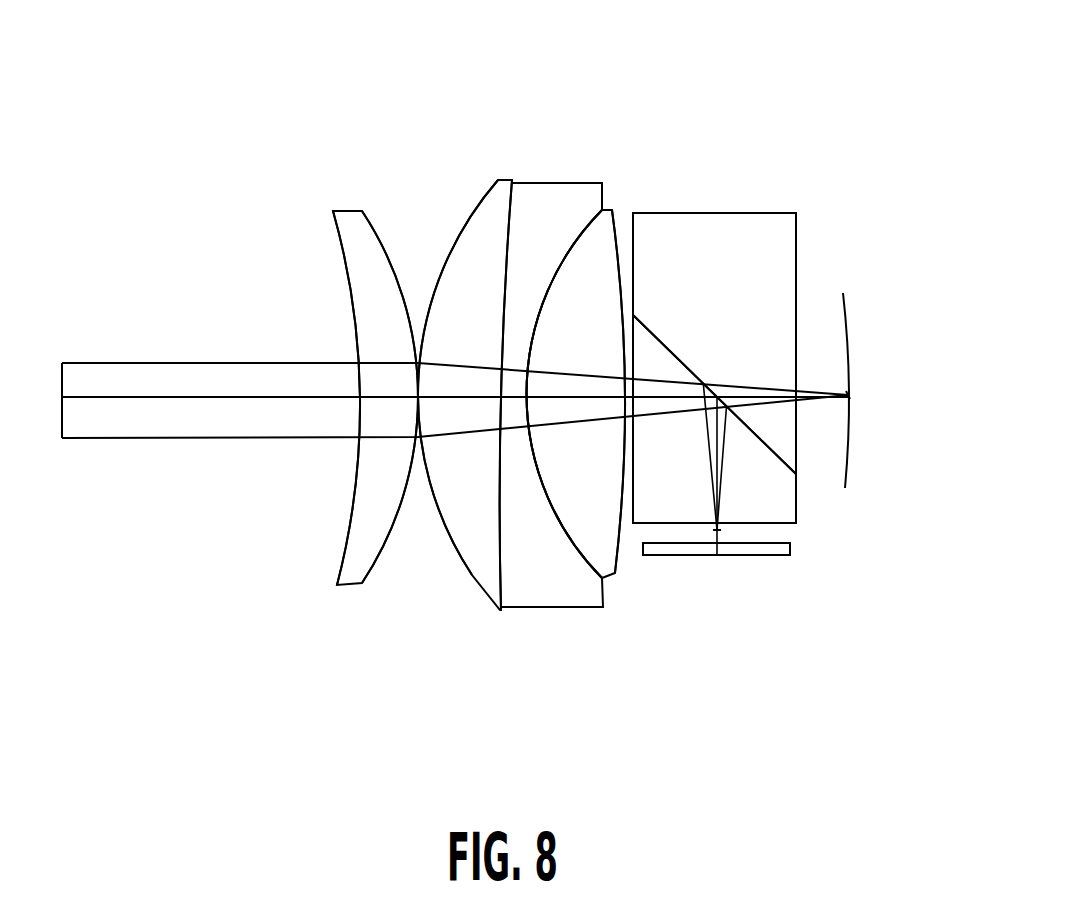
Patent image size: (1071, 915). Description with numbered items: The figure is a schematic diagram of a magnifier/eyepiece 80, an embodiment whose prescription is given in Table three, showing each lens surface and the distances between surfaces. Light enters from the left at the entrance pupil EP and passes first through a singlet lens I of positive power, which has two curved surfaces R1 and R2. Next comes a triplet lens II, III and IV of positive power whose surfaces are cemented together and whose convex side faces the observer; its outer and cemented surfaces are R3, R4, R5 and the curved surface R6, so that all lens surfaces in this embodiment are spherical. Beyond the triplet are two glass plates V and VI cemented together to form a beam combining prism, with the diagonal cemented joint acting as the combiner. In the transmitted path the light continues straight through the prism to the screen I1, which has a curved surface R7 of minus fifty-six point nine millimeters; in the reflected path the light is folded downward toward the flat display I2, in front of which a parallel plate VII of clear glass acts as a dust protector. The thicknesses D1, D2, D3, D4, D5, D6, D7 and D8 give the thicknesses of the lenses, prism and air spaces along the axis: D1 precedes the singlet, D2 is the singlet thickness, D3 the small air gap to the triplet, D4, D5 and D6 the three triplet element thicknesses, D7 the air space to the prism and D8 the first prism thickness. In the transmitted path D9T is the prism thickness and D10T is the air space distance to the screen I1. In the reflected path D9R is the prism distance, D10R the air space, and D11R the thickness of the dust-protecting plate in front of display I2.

The magnifier/eyepiece 80 is at (158, 120).
The entrance pupil EP is at (56, 375).
The singlet lens I is at (375, 398).
The triplet lens element II is at (465, 395).
The triplet lens element III is at (551, 395).
The triplet lens element IV is at (576, 394).
The glass plate V is at (714, 419).
The glass plate VI is at (714, 368).
The plane-parallel plate VII is at (682, 550).
The lens surface R1 is at (330, 213).
The lens surface R2 is at (380, 222).
The lens surface R3 is at (463, 228).
The lens surface R4 is at (512, 180).
The lens surface R5 is at (588, 230).
The lens surface R6 is at (613, 228).
The radius of anode screen R7 is at (840, 322).
The screen I1 is at (850, 372).
The display I2 is at (733, 556).
The thickness D1 is at (207, 400).
The thickness D2 is at (385, 400).
The thickness D3 is at (417, 497).
The thickness D4 is at (487, 407).
The thickness D5 is at (548, 398).
The thickness D6 is at (590, 400).
The thickness D7 is at (627, 400).
The thickness D8 is at (653, 395).
The thickness D9T is at (747, 395).
The air space distance in transmitted path D10T is at (811, 388).
The distance in reflected path D9R is at (717, 470).
The distance in reflected path D10R is at (720, 533).
The distance in reflected path D11R is at (720, 552).